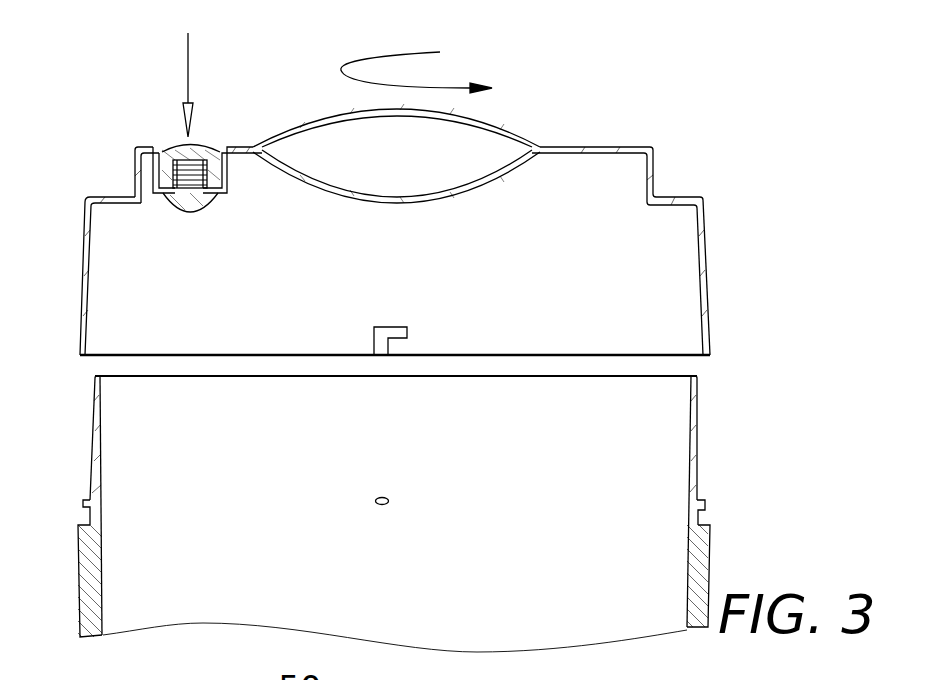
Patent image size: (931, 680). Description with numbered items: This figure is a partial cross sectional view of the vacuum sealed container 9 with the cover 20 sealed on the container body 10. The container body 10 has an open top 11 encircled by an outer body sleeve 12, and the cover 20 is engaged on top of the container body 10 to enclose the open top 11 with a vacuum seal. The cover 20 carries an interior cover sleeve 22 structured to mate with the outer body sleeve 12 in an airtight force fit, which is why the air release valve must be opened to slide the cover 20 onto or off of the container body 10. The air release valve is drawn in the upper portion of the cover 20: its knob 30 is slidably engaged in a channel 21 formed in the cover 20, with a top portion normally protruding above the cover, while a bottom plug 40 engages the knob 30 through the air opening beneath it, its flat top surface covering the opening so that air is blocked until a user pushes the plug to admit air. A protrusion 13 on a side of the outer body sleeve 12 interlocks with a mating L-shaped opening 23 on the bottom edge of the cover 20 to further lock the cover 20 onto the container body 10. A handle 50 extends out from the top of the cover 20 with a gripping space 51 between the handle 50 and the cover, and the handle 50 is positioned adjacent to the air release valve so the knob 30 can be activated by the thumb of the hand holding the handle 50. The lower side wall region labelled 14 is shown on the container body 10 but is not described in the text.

The vacuum sealed container 9 is at (713, 180).
The container body 10 is at (392, 505).
The open top 11 is at (95, 377).
The outer body sleeve 12 is at (90, 440).
The protrusion 13 is at (82, 502).
The lower side wall 14 is at (80, 523).
The cover 20 is at (708, 273).
The channel 21 is at (134, 181).
The interior cover sleeve 22 is at (90, 277).
The L-shaped opening 23 is at (383, 327).
The air release valve knob 30 is at (182, 143).
The bottom plug 40 is at (193, 213).
The handle 50 is at (302, 127).
The gripping space 51 is at (457, 158).